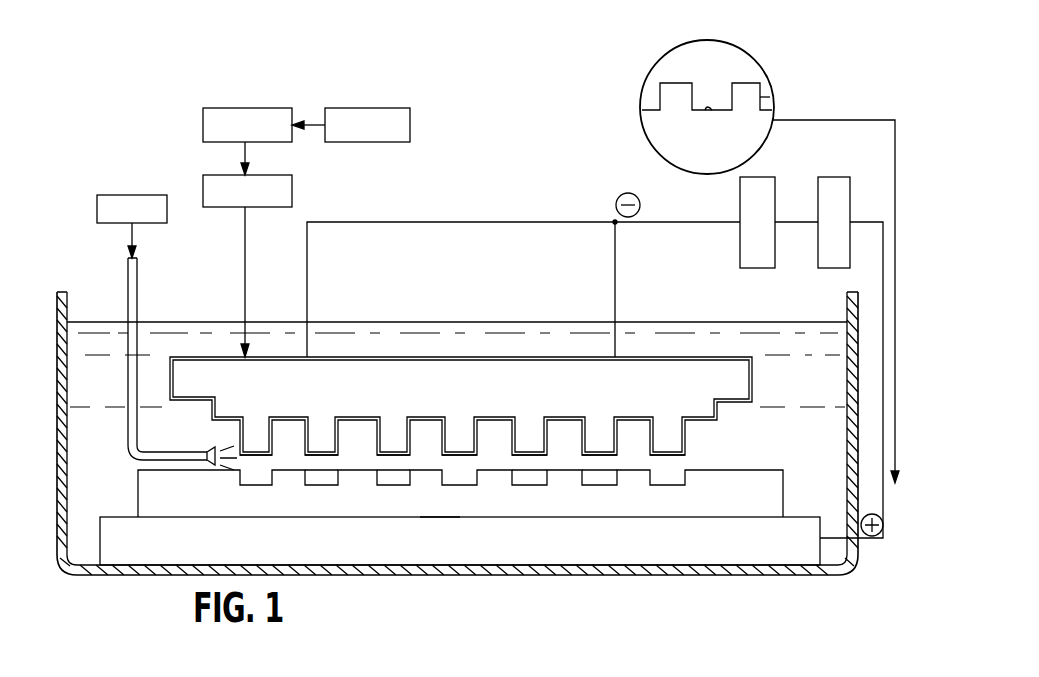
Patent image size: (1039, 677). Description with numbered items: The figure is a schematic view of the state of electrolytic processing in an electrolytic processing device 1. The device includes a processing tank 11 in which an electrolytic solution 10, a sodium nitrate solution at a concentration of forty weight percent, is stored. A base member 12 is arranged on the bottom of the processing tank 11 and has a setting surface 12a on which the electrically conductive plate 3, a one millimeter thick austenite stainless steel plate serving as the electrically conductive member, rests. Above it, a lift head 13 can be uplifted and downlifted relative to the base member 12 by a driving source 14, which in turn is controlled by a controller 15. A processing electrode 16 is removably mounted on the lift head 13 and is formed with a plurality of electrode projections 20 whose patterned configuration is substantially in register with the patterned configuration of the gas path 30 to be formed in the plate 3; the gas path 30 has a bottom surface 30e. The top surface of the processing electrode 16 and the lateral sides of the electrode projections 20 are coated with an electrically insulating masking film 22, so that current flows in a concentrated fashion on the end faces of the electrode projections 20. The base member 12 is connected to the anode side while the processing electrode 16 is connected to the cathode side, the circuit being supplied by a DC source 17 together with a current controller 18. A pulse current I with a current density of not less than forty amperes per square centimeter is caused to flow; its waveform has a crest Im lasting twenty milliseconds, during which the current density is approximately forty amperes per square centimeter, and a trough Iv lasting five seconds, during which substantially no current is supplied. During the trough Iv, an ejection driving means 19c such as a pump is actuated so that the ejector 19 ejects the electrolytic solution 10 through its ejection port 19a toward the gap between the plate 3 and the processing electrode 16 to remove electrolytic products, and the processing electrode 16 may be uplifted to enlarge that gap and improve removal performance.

The electrolytic processing device 1 is at (57, 375).
The electrolytic solution 10 is at (76, 432).
The processing tank 11 is at (67, 497).
The base member 12 is at (110, 536).
The setting surface 12a is at (440, 520).
The electrically conductive plate 3 is at (765, 492).
The gas path 30 is at (388, 486).
The bottom surface 30e is at (322, 486).
The processing electrode 16 is at (345, 357).
The electrode projection 20 is at (320, 443).
The masking film 22 is at (370, 443).
The ejector 19 is at (140, 292).
The ejection port 19a is at (212, 464).
The ejection driving means 19c is at (112, 195).
The lift head 13 is at (292, 190).
The driving source 14 is at (203, 122).
The controller 15 is at (410, 125).
The DC source 17 is at (770, 190).
The current controller 18 is at (846, 194).
The crest Im is at (665, 83).
The pulse current I is at (770, 97).
The trough Iv is at (707, 110).